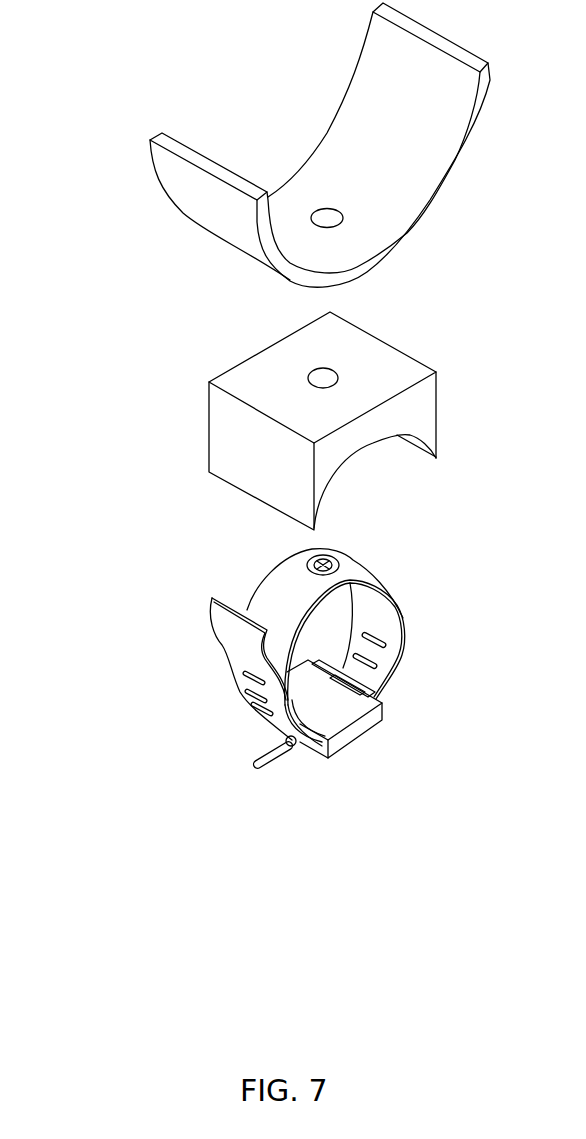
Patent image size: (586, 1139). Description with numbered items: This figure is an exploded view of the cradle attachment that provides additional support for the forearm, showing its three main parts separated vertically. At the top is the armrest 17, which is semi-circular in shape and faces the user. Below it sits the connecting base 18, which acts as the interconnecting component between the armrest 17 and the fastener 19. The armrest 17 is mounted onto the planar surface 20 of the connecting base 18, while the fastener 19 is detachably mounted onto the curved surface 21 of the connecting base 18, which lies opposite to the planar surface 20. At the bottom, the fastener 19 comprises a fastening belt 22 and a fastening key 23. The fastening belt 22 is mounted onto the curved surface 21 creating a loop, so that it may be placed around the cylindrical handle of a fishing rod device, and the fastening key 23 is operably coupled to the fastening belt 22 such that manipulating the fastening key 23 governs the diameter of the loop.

The armrest 17 is at (172, 187).
The connecting base 18 is at (309, 416).
The planar surface 20 is at (398, 372).
The curved surface 21 is at (415, 440).
The fastener 19 is at (231, 679).
The fastening belt 22 is at (233, 683).
The fastening key 23 is at (253, 757).